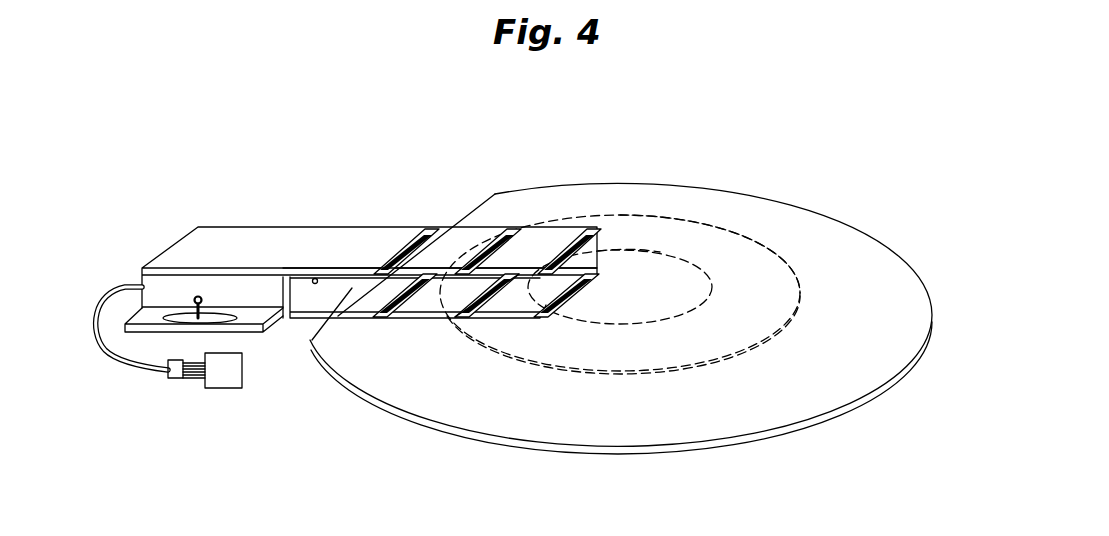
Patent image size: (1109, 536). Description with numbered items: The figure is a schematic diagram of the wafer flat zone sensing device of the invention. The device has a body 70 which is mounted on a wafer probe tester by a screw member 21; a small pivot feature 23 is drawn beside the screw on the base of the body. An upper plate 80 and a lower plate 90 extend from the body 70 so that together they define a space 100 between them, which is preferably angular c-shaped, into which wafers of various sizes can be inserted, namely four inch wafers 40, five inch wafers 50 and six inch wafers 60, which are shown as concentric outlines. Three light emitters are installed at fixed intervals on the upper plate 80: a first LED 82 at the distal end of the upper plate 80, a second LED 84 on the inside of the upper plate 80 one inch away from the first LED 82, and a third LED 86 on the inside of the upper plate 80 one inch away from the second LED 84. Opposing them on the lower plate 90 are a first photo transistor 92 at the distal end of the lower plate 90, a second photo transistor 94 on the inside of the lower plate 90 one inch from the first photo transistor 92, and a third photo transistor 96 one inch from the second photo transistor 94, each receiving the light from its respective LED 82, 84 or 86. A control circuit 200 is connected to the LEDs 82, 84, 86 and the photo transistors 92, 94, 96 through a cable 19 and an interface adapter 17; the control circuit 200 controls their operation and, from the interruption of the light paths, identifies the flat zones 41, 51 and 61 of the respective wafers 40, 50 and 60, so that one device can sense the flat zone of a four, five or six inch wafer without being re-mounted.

The interface adapter 17 is at (184, 379).
The cable 19 is at (108, 356).
The screw member 21 is at (195, 297).
The pivot bearing 23 is at (213, 317).
The 4 inch wafer 40 is at (672, 318).
The flat zone of 4 inch wafer 41 is at (539, 272).
The 5 inch wafer 50 is at (747, 349).
The flat zone of 5 inch wafer 51 is at (457, 285).
The 6 inch wafer 60 is at (880, 390).
The flat zone of 6 inch wafer 61 is at (395, 263).
The body 70 is at (287, 238).
The upper plate 80 is at (604, 216).
The 1st LED 82 is at (598, 251).
The 2nd LED 84 is at (495, 266).
The 3rd LED 86 is at (422, 227).
The lower plate 90 is at (423, 322).
The 1st photo transistor 92 is at (570, 300).
The 2nd photo transistor 94 is at (503, 300).
The 3rd photo transistor 96 is at (405, 312).
The space 100 is at (332, 280).
The control circuit 200 is at (227, 388).